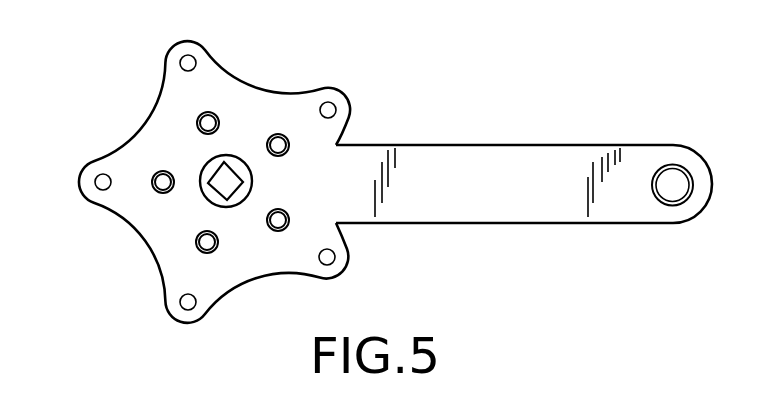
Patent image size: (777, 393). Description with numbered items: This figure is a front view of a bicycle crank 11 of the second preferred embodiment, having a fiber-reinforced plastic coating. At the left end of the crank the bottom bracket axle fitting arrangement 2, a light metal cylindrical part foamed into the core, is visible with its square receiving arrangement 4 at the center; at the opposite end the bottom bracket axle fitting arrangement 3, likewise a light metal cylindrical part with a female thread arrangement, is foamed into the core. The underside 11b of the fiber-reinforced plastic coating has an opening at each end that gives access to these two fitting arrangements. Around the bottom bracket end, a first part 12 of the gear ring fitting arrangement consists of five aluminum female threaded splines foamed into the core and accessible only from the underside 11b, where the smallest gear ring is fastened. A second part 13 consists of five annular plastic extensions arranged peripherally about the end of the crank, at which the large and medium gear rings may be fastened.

The bottom bracket axle fitting arrangement 2 is at (200, 165).
The bottom bracket axle fitting arrangement 3 is at (688, 210).
The square receiving arrangement 4 is at (236, 183).
The bicycle crank 11 is at (524, 145).
The underside 11b is at (516, 224).
The first part of the gear ring fitting arrangement 12 is at (278, 134).
The second part 13 is at (183, 42).